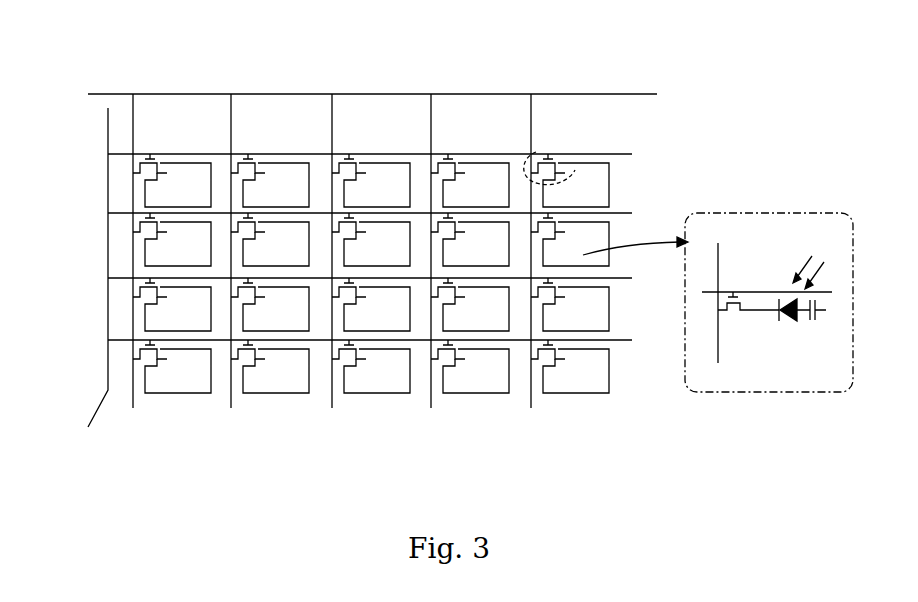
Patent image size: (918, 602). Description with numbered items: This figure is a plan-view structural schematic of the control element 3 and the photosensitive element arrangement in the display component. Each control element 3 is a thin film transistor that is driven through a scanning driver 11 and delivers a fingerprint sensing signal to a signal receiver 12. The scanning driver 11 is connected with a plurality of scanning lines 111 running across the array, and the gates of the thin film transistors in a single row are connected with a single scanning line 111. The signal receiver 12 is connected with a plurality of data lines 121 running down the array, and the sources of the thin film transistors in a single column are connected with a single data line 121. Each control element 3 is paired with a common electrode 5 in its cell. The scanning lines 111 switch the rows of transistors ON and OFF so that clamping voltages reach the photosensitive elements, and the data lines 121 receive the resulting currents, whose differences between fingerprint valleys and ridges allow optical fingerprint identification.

The signal receiver 12 is at (622, 94).
The scanning line 111 is at (630, 154).
The data line 121 is at (231, 392).
The scanning driver 11 is at (87, 282).
The control element 3 is at (532, 150).
The common electrode 5 is at (597, 190).